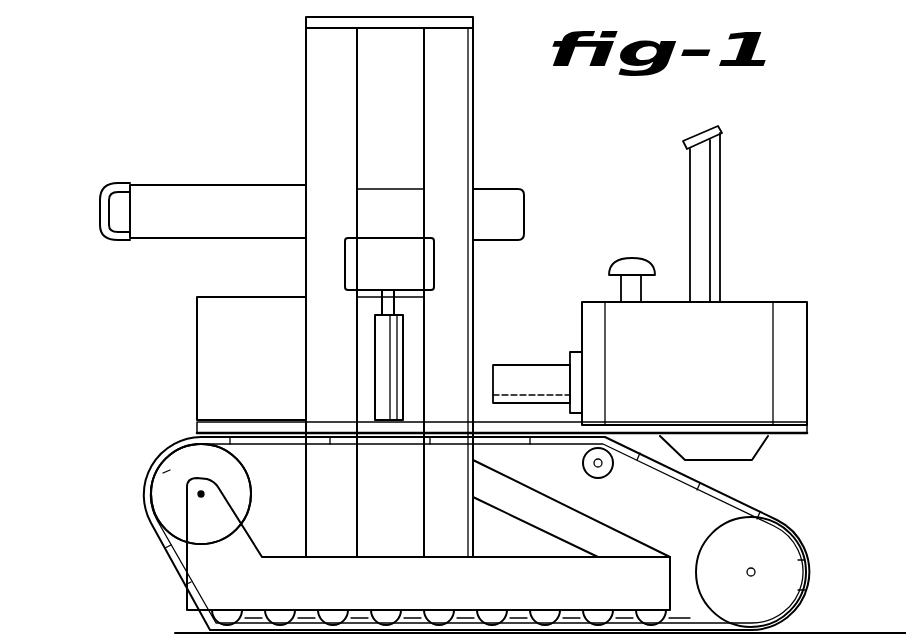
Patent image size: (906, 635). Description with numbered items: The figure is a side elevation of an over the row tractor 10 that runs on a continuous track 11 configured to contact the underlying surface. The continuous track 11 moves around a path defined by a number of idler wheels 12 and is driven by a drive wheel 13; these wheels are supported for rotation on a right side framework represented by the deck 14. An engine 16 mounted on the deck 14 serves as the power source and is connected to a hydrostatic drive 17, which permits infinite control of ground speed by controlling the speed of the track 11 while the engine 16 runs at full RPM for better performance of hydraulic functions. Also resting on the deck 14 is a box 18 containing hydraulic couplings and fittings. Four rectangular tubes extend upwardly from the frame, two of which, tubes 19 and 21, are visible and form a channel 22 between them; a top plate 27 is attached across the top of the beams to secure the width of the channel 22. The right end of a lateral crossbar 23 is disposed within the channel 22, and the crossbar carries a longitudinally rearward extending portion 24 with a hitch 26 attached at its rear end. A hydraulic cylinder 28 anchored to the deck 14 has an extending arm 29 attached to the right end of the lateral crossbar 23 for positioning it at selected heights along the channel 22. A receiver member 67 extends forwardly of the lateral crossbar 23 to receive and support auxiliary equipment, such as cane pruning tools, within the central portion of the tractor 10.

The over the row tractor 10 is at (178, 90).
The continuous track 11 is at (782, 520).
The idler wheels 12 is at (604, 478).
The drive wheel 13 is at (178, 455).
The deck 14 is at (785, 438).
The engine 16 is at (730, 302).
The hydrostatic drive 17 is at (503, 365).
The box 18 is at (197, 326).
The rectangular tube 19 is at (306, 107).
The rectangular tube 21 is at (473, 105).
The channel 22 is at (412, 110).
The lateral crossbar 23 is at (372, 197).
The longitudinally rearward extending portion 24 is at (168, 185).
The hitch 26 is at (105, 183).
The top plate 27 is at (326, 27).
The hydraulic cylinder 28 is at (382, 343).
The extending arm 29 is at (380, 297).
The receiver member 67 is at (497, 240).